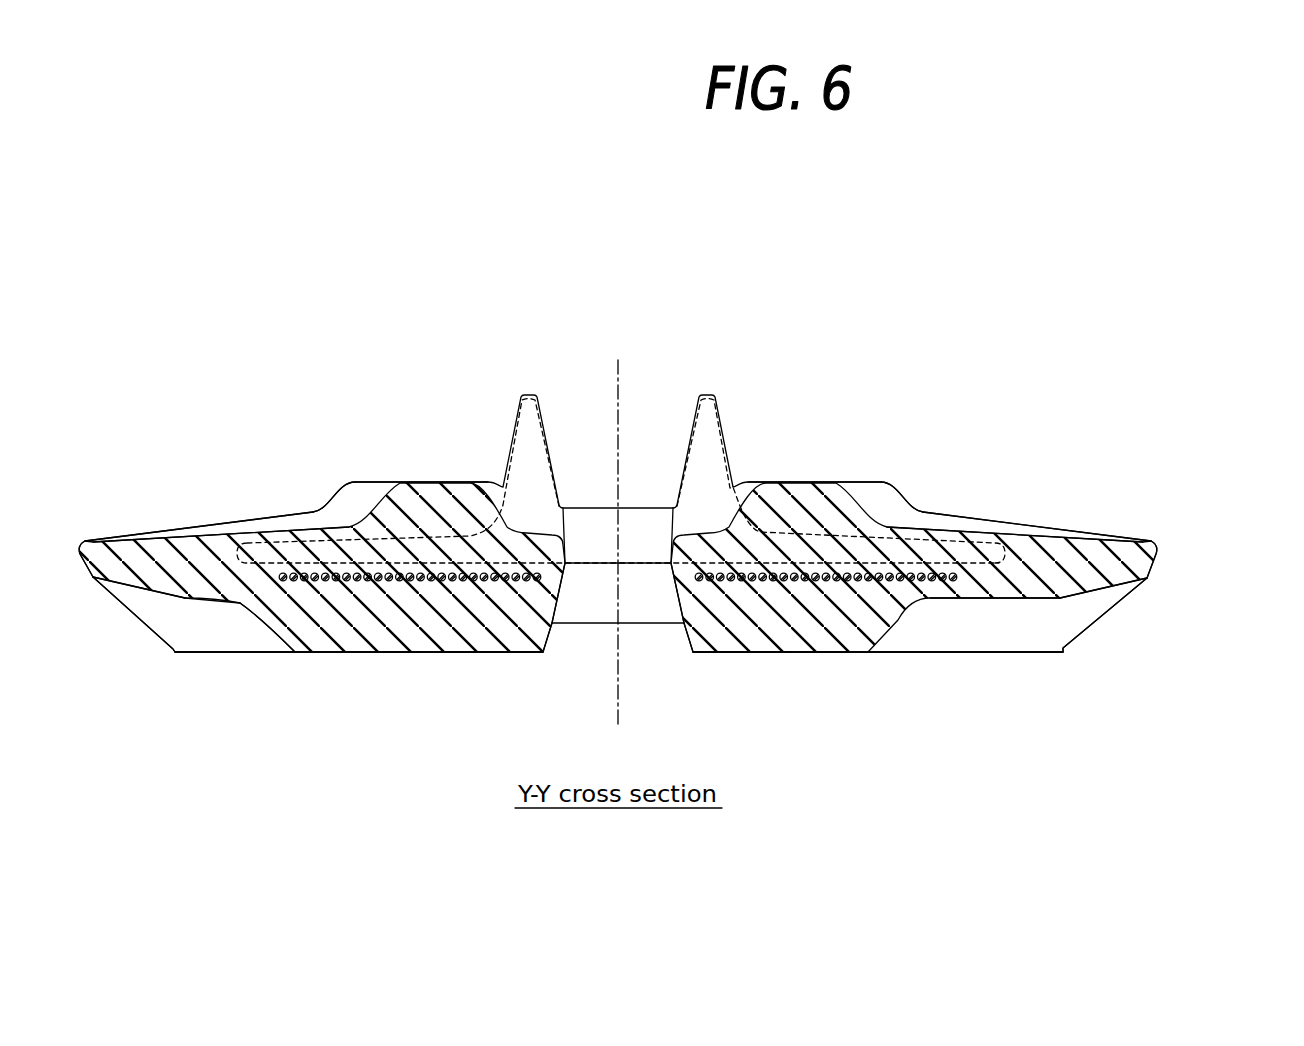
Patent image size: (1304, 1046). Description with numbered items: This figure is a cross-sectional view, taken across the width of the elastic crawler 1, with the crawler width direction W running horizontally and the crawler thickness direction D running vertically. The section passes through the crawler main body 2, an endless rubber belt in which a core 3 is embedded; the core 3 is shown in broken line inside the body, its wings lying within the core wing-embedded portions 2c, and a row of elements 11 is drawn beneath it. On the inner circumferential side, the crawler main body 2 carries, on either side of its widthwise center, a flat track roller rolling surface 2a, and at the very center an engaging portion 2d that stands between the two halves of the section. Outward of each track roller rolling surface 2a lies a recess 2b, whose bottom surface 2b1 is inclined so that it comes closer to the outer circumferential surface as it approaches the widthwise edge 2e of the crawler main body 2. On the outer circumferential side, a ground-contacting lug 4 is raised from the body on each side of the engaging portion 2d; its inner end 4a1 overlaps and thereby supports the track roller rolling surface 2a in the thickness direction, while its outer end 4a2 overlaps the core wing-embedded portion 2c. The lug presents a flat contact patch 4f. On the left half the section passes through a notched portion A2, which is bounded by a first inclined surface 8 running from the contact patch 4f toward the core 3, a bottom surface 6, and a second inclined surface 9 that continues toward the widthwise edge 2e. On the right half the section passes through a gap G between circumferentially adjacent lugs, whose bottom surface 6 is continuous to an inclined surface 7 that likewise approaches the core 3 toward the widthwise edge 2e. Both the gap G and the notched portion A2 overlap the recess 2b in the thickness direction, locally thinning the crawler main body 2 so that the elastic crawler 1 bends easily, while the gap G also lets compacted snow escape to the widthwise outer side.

The elastic crawler 1 is at (936, 406).
The crawler main body 2 is at (91, 548).
The track roller rolling surface 2a is at (428, 481).
The recess 2b is at (311, 516).
The bottom surface of recess 2b1 is at (1092, 490).
The core wing-embedded portion 2c is at (230, 514).
The engaging portion 2d is at (641, 551).
The widthwise edge 2e is at (79, 556).
The core 3 is at (521, 443).
The ground-contacting lug 4 is at (357, 656).
The inner end of widthwise lug portion 4a1 is at (486, 641).
The outer end of widthwise lug portion 4a2 is at (1082, 695).
The contact patch 4f is at (397, 654).
The bottom surface 6 is at (203, 599).
The inclined surface 7 is at (1088, 591).
The first inclined surface 8 is at (268, 631).
The second inclined surface 9 is at (133, 590).
The cord row 11 is at (440, 587).
The notched portion A2 is at (213, 629).
The gap G is at (1016, 619).
The crawler width direction W is at (710, 307).
The crawler thickness direction D is at (1227, 487).